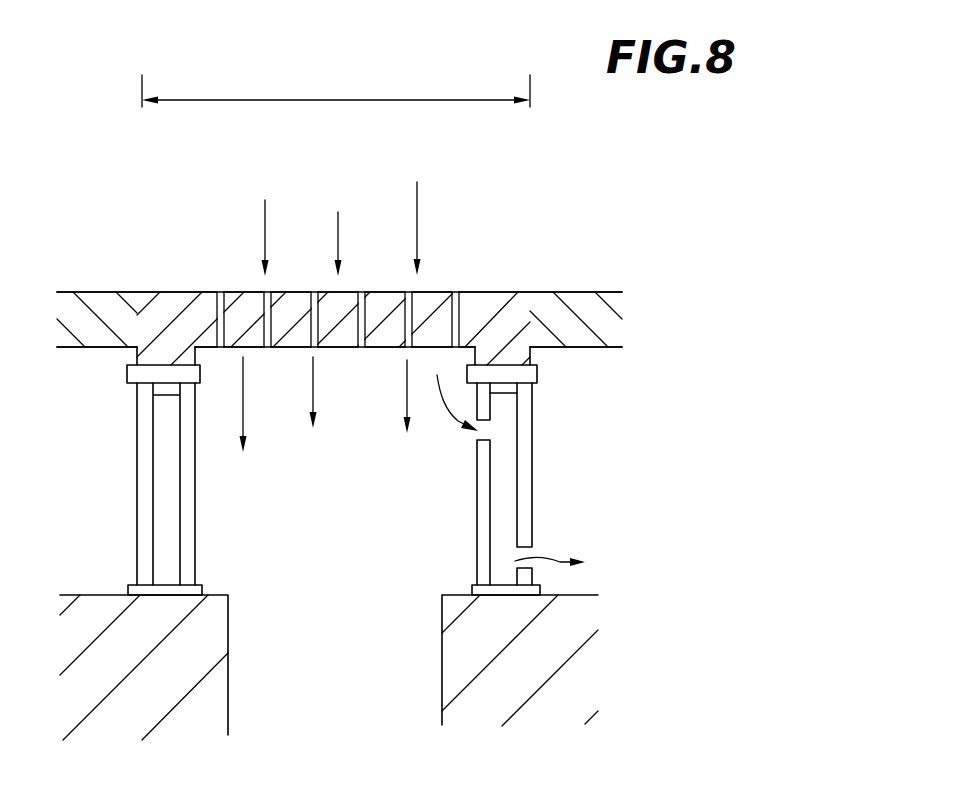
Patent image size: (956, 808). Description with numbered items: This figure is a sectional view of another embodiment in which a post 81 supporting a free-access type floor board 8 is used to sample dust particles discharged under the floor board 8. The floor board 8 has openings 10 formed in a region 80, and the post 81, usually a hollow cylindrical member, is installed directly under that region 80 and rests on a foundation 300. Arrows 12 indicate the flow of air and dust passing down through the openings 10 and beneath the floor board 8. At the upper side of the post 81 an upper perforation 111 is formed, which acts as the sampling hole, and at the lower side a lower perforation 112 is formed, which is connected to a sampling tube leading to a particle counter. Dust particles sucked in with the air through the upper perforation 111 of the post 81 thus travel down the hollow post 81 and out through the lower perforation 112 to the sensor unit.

The floor board 8 is at (348, 293).
The openings 10 is at (223, 293).
The particle flow 12 is at (417, 200).
The regions of the floor board 80 is at (348, 100).
The post 81 is at (608, 480).
The upper perforation 111 is at (465, 435).
The lower perforation 112 is at (515, 562).
The foundation 300 is at (582, 662).